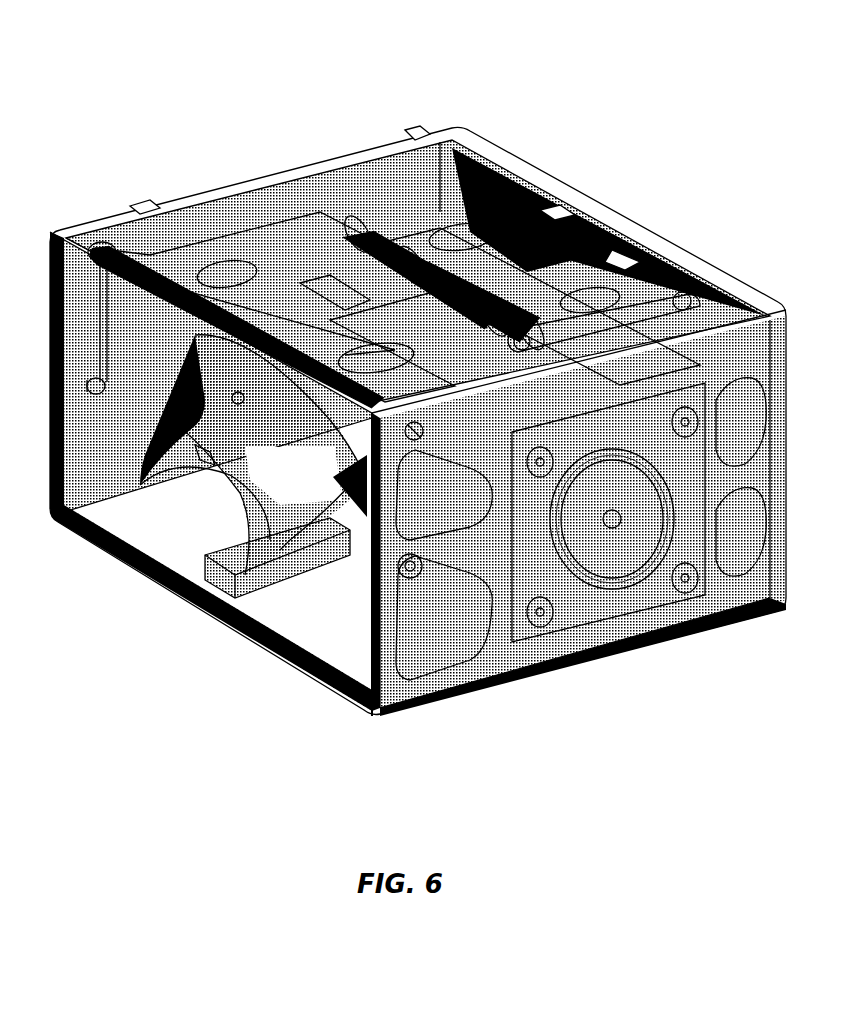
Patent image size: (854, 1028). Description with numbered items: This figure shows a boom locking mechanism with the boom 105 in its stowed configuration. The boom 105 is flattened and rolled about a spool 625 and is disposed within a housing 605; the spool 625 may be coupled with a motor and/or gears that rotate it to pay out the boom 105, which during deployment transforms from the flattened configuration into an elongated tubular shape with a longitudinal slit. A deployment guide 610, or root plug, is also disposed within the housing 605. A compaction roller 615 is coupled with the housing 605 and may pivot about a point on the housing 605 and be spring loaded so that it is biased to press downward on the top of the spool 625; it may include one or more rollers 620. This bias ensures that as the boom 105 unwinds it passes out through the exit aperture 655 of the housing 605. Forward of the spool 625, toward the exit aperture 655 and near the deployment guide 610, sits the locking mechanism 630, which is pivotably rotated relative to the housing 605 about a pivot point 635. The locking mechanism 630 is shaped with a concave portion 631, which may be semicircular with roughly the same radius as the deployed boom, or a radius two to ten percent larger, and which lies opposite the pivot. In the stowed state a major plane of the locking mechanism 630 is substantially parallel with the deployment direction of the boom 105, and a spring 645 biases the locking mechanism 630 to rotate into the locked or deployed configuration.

The exit aperture 655 is at (262, 692).
The housing 605 is at (483, 632).
The pivot point 635 is at (420, 437).
The boom 105 is at (268, 452).
The deployment guide 610 is at (205, 455).
The spring 645 is at (107, 247).
The spool 625 is at (278, 240).
The locking mechanism 630 is at (280, 288).
The compaction roller 615 is at (492, 208).
The rollers 620 is at (377, 253).
The concave portion 631 is at (363, 300).